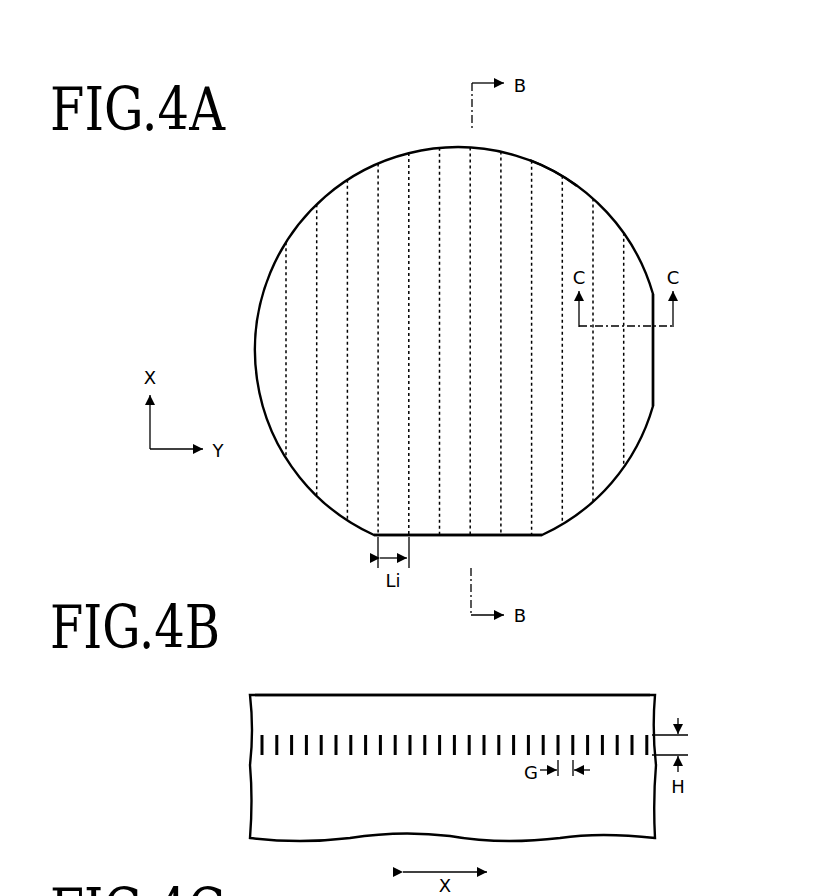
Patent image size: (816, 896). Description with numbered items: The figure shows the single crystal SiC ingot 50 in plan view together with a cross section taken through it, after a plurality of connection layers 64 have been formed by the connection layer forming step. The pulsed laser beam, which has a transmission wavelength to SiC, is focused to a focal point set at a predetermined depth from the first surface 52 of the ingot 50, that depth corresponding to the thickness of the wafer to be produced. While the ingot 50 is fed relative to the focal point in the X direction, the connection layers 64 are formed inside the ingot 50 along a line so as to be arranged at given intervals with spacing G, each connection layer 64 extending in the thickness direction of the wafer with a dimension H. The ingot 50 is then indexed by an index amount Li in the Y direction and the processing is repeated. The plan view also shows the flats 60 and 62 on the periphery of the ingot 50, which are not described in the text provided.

In FIG. 4A, the ingot 50 is at (284, 243).
In FIG. 4B, the ingot 50 is at (282, 694).
In FIG. 4A, the first surface 52 is at (577, 198).
In FIG. 4B, the first surface 52 is at (617, 697).
In FIG. 4A, the orientation flat 60 is at (512, 537).
In FIG. 4A, the second flat 62 is at (654, 383).
In FIG. 4A, the connection layer 64 is at (563, 497).
In FIG. 4B, the connection layer 64 is at (258, 782).